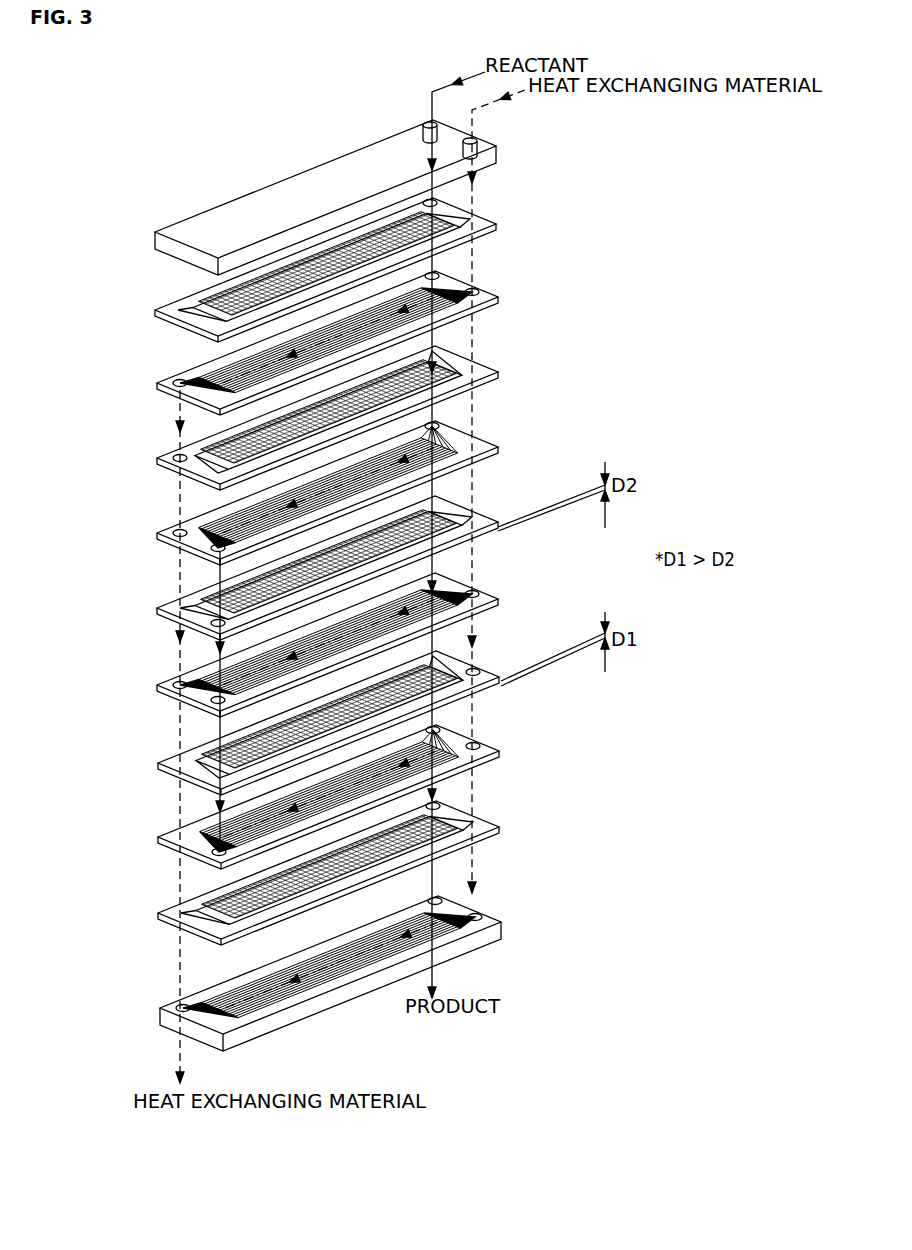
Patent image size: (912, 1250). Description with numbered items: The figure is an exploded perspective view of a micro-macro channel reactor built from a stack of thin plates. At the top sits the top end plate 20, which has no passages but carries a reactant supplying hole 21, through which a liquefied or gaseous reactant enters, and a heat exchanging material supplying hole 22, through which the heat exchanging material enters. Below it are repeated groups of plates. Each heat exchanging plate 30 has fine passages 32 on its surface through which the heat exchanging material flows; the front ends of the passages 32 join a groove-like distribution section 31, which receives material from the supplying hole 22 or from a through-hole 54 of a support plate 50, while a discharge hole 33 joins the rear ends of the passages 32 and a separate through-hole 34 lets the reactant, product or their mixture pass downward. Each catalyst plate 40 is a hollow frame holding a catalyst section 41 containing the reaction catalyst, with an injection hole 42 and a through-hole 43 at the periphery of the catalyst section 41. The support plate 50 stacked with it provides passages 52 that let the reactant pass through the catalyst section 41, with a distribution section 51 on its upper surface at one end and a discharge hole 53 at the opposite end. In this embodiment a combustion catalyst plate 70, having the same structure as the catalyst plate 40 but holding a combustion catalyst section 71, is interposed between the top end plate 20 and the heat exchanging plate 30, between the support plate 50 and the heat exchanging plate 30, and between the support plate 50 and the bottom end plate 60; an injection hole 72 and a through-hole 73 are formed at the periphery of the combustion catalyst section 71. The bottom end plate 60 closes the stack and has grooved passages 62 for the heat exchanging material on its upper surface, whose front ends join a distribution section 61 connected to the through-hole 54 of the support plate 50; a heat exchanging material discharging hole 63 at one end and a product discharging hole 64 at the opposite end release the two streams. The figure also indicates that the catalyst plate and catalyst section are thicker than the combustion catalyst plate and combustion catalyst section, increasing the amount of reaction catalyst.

The top end plate 20 is at (262, 185).
The reactant supplying hole 21 is at (428, 122).
The heat exchanging material supplying hole 22 is at (480, 138).
The heat exchanging plate 30 is at (157, 385).
The distribution section 31 is at (480, 293).
The passages 32 is at (232, 365).
The discharge hole 33 is at (195, 378).
The through-hole 34 is at (440, 275).
The catalyst plate 40 is at (157, 460).
The catalyst section 41 is at (417, 392).
The injection hole 42 is at (440, 366).
The through-hole 43 is at (175, 456).
The support plate 50 is at (157, 535).
The distribution section 51 is at (445, 432).
The passages 52 is at (445, 455).
The discharge hole 53 is at (214, 549).
The through-hole 54 is at (175, 532).
The bottom end plate 60 is at (160, 1003).
The distribution section 61 is at (480, 915).
The passages 62 is at (275, 1000).
The heat exchanging material discharging hole 63 is at (183, 1003).
The product discharging hole 64 is at (437, 900).
The combustion catalyst plate 70 is at (500, 219).
The combustion catalyst section 71 is at (400, 240).
The injection hole 72 is at (438, 205).
The through-hole 73 is at (455, 218).